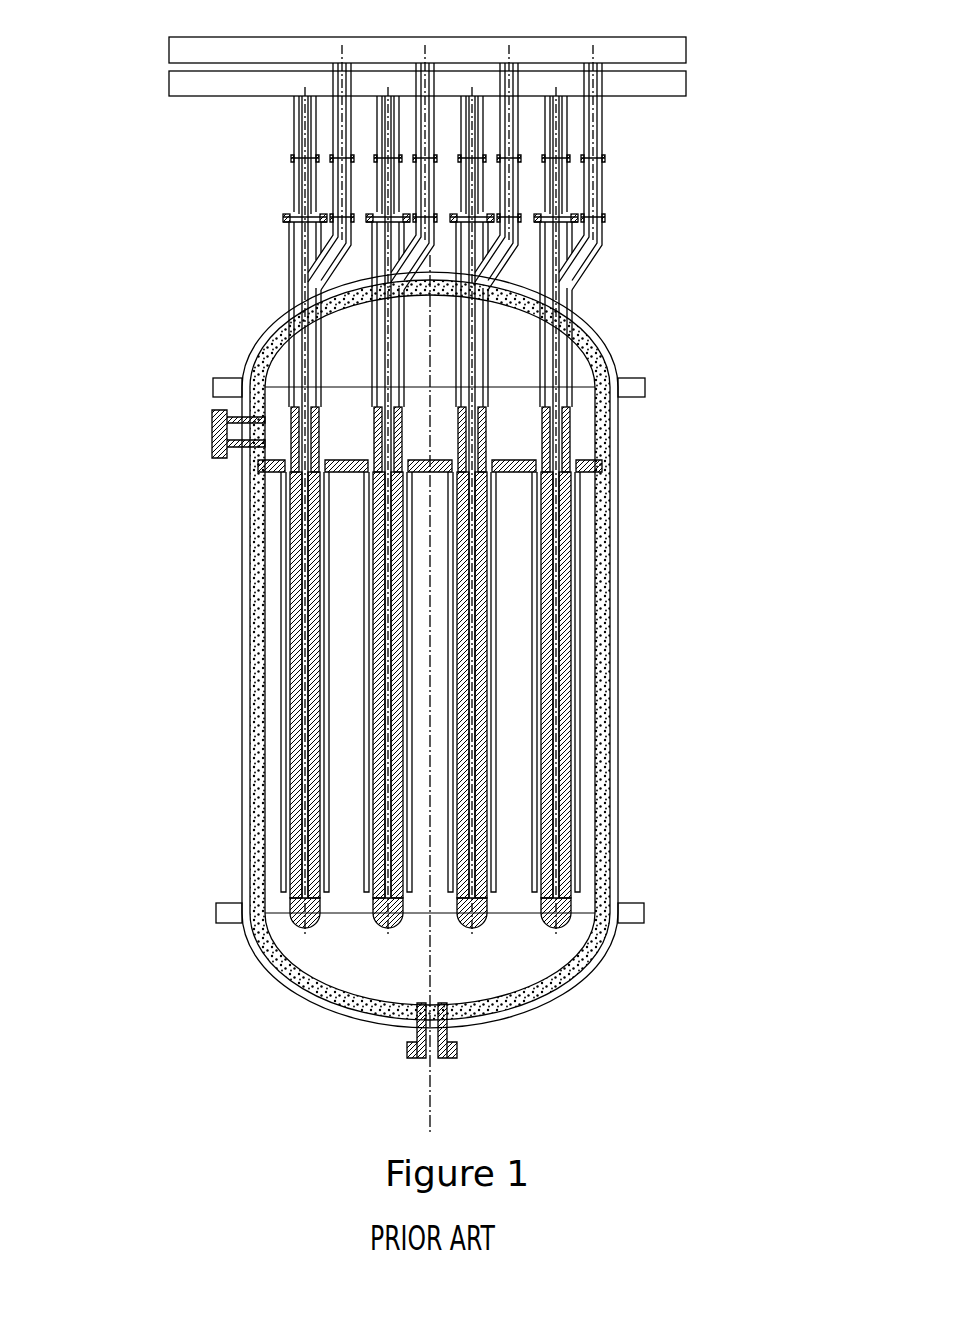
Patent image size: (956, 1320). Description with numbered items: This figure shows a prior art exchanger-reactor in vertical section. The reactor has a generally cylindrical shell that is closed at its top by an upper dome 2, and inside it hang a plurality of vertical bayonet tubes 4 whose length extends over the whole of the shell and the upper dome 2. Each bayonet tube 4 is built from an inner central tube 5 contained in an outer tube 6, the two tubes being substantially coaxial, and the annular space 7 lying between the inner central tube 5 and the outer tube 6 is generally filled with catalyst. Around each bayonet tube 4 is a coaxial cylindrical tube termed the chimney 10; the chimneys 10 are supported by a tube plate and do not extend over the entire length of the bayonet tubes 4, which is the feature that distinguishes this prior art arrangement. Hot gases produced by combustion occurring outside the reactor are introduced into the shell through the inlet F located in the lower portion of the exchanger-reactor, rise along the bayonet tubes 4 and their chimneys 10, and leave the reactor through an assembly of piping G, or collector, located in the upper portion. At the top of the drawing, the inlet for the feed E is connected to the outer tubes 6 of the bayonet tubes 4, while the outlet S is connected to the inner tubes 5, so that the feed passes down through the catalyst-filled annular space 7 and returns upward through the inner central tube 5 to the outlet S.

The upper dome 2 is at (600, 333).
The bayonet tube 4 is at (645, 491).
The inner central tube 5 is at (622, 682).
The outer tube 6 is at (583, 757).
The annular space 7 is at (572, 600).
The chimney 10 is at (285, 705).
The outlet S is at (169, 48).
The inlet for the feed E is at (686, 90).
The assembly of piping G is at (265, 432).
The inlet F is at (430, 1118).